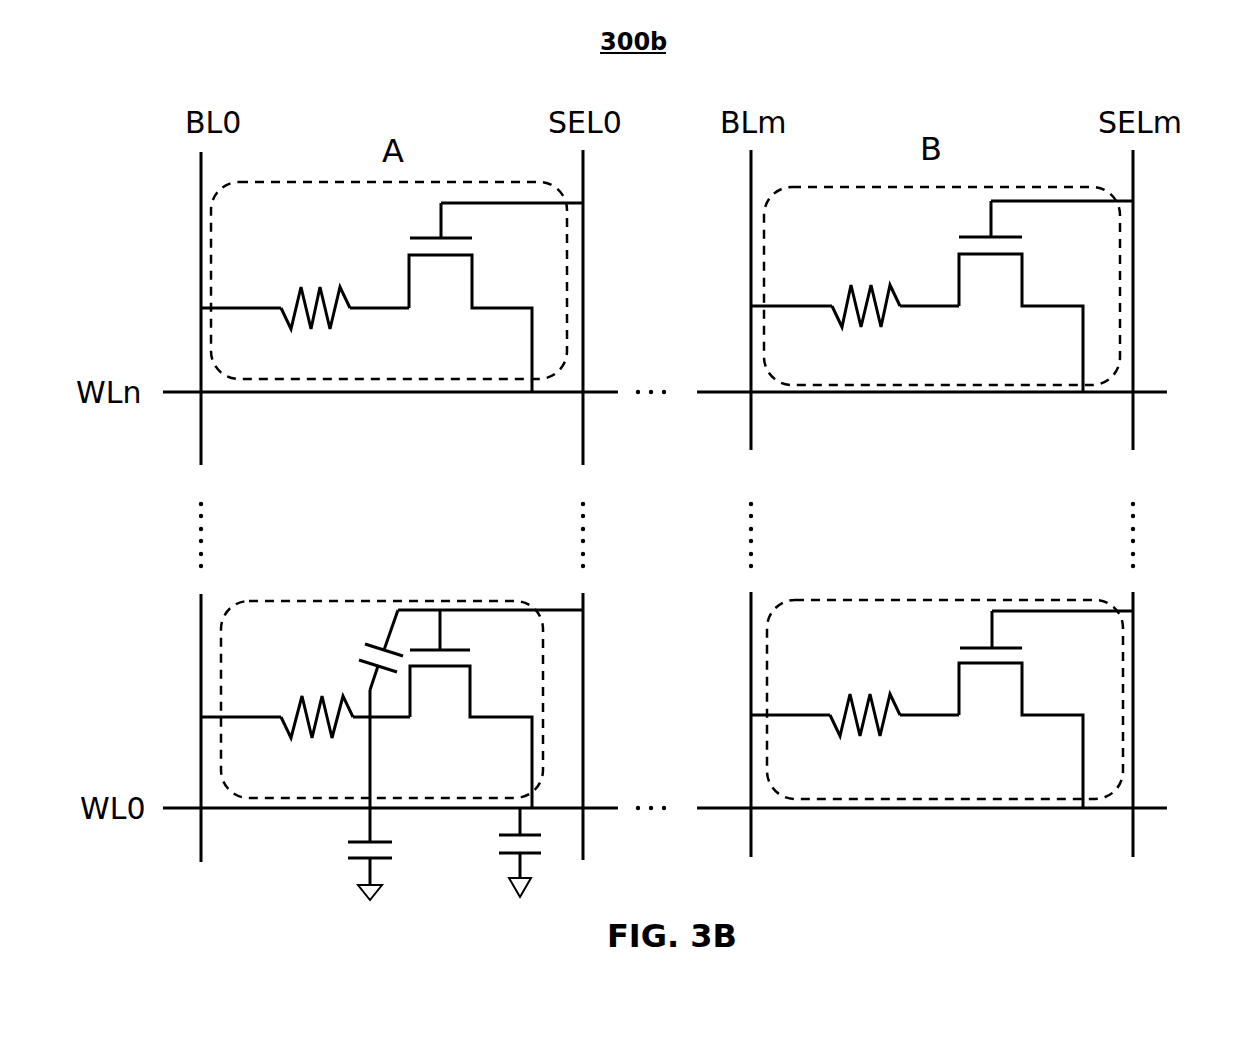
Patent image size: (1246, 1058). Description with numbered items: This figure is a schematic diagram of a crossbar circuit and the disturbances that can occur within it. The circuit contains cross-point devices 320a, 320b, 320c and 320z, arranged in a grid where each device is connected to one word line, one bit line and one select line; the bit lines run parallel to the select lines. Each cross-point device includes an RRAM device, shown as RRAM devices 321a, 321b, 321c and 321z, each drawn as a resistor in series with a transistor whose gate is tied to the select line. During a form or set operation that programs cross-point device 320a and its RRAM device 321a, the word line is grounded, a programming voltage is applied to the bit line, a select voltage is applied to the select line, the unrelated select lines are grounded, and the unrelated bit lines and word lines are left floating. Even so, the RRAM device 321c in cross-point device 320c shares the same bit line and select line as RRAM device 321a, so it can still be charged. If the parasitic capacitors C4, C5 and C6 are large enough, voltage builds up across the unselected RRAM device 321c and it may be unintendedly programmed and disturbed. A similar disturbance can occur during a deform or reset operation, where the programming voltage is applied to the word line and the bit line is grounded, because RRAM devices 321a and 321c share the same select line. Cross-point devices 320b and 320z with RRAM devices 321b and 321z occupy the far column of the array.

The cross-point device 320a is at (431, 286).
The cross-point device 320b is at (990, 283).
The cross-point device 320c is at (432, 704).
The cross-point device 320z is at (984, 704).
The RRAM device 321a is at (334, 327).
The RRAM device 321b is at (883, 325).
The RRAM device 321c is at (311, 742).
The RRAM device 321z is at (886, 735).
The parasitic capacitor C4 is at (357, 663).
The parasitic capacitor C5 is at (391, 808).
The parasitic capacitor C6 is at (539, 852).